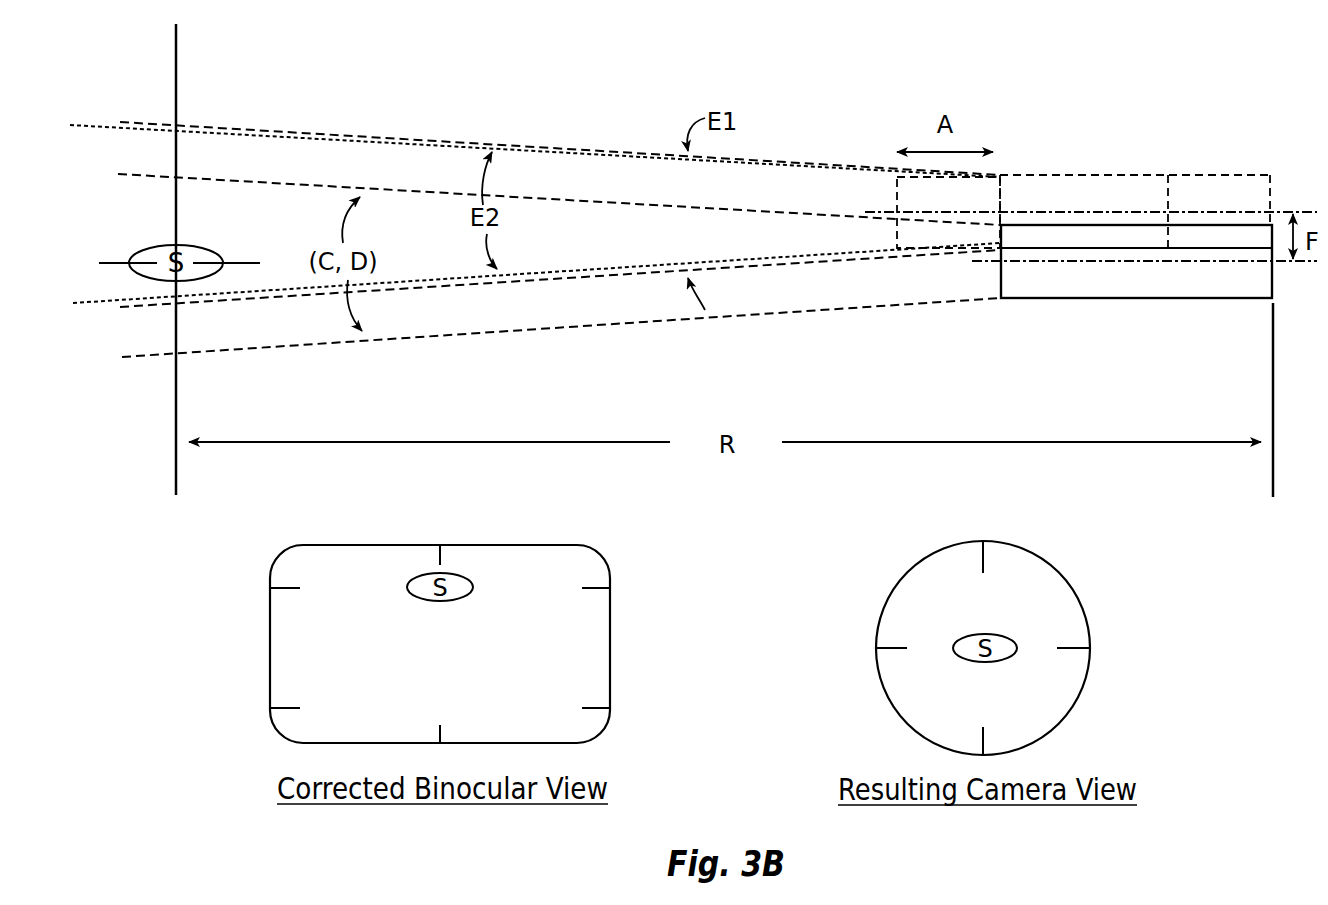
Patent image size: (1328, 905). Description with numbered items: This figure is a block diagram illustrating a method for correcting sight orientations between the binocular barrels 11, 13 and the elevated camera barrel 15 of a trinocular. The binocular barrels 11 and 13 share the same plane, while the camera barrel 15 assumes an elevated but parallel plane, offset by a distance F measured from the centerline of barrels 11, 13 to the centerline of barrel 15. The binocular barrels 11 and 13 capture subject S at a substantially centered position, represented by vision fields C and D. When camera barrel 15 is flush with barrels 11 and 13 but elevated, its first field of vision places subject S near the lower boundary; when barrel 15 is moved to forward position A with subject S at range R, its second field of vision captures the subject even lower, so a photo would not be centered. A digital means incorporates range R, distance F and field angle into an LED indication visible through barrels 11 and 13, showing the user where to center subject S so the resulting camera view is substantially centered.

The camera barrel 15 is at (1033, 173).
The binocular barrel 11 is at (1120, 306).
The binocular barrel 13 is at (1095, 298).